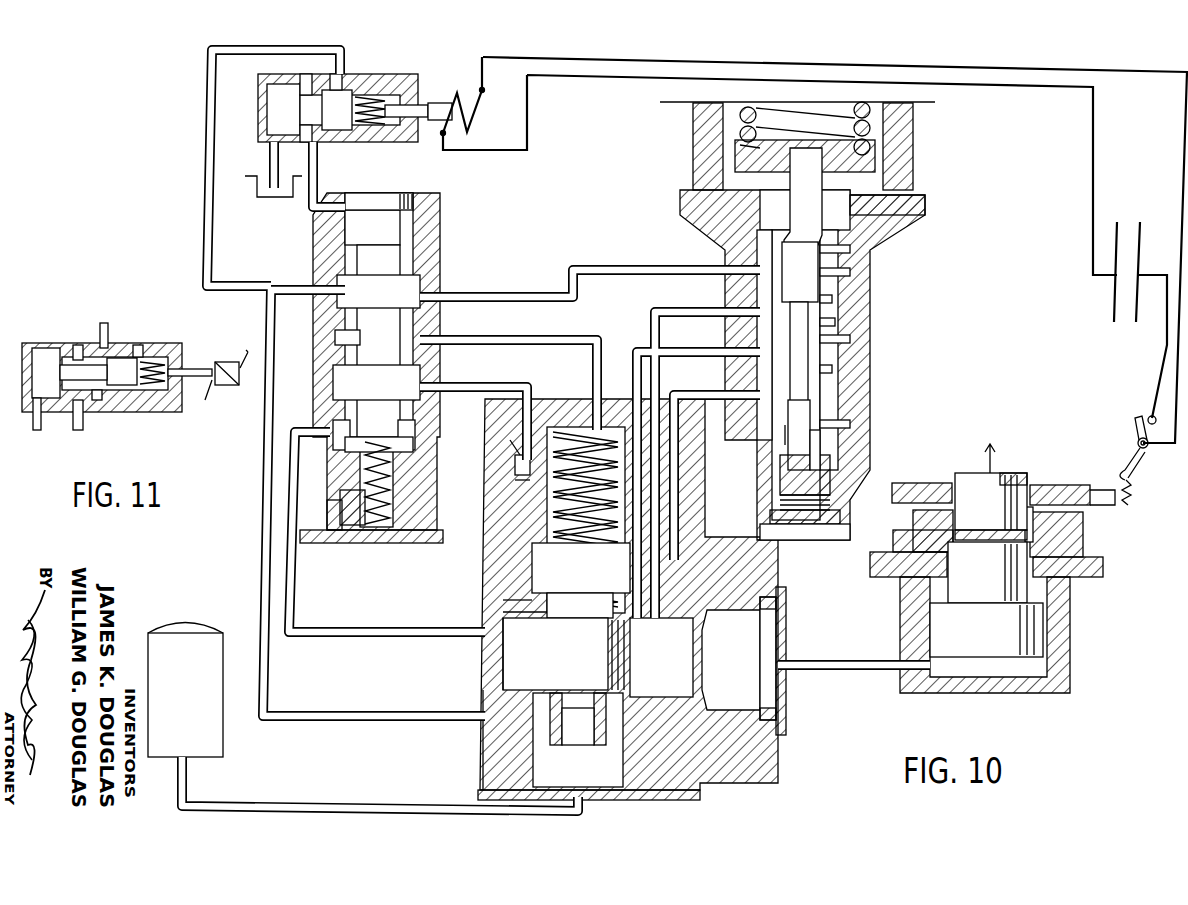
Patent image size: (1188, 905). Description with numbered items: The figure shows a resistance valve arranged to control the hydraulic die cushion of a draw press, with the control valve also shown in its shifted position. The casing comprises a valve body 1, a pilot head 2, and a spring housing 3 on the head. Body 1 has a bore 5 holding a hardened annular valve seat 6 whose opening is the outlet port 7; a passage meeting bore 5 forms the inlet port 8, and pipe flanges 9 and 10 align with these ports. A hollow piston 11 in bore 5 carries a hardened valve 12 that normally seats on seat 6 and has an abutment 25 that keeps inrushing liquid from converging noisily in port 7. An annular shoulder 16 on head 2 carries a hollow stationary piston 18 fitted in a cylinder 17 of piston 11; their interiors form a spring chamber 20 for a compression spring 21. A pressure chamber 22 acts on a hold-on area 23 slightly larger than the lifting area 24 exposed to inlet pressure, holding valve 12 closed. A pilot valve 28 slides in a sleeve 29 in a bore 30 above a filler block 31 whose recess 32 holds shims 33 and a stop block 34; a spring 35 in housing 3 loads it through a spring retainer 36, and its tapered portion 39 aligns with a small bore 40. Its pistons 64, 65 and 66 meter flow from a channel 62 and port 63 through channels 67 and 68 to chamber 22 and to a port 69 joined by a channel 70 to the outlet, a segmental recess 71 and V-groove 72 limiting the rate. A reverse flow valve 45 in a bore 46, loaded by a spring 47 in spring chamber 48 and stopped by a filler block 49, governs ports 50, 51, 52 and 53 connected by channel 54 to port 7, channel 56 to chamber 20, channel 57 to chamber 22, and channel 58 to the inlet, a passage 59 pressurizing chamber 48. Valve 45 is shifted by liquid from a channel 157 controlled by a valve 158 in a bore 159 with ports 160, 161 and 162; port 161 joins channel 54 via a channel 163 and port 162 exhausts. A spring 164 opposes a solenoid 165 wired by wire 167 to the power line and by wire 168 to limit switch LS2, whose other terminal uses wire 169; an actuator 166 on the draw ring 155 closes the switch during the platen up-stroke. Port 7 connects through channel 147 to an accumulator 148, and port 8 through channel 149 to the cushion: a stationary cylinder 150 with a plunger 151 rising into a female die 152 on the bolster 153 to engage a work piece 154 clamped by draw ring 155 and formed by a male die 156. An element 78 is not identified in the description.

In FIG. 10, the valve body 1 is at (758, 766).
In FIG. 10, the pilot head 2 is at (330, 247).
In FIG. 10, the spring housing 3 is at (410, 543).
In FIG. 10, the bore 5 is at (505, 611).
In FIG. 10, the valve seat 6 is at (482, 770).
In FIG. 10, the outlet port 7 is at (558, 770).
In FIG. 10, the inlet port 8 is at (738, 647).
In FIG. 10, the pipe flange 9 is at (676, 800).
In FIG. 10, the pipe flange 10 is at (786, 705).
In FIG. 10, the hollow piston 11 is at (515, 654).
In FIG. 10, the valve 12 is at (572, 655).
In FIG. 10, the annular shoulder 16 is at (512, 444).
In FIG. 10, the cylinder 17 is at (525, 600).
In FIG. 10, the stationary piston 18 is at (522, 514).
In FIG. 10, the spring chamber 20 is at (545, 582).
In FIG. 10, the compression spring 21 is at (536, 560).
In FIG. 10, the pressure chamber 22 is at (514, 464).
In FIG. 10, the hold-on area 23 is at (520, 487).
In FIG. 10, the lifting area 24 is at (641, 626).
In FIG. 10, the abutment 25 is at (588, 729).
In FIG. 10, the pilot valve 28 is at (808, 303).
In FIG. 10, the sleeve 29 is at (835, 300).
In FIG. 10, the bore 30 is at (838, 323).
In FIG. 10, the filler block 31 is at (822, 526).
In FIG. 10, the recess 32 is at (833, 492).
In FIG. 10, the shims 33 is at (795, 525).
In FIG. 10, the stop block 34 is at (833, 472).
In FIG. 10, the compression spring 35 is at (873, 123).
In FIG. 10, the spring retainer 36 is at (875, 167).
In FIG. 10, the tapered portion 39 is at (796, 232).
In FIG. 10, the small bore 40 is at (905, 212).
In FIG. 10, the reverse flow valve 45 is at (392, 329).
In FIG. 10, the bore 46 is at (340, 545).
In FIG. 10, the spring 47 is at (376, 528).
In FIG. 10, the spring chamber 48 is at (342, 510).
In FIG. 10, the filler block 49 is at (398, 192).
In FIG. 10, the port 50 is at (440, 291).
In FIG. 10, the port 51 is at (335, 342).
In FIG. 10, the port 52 is at (333, 373).
In FIG. 10, the port 53 is at (333, 426).
In FIG. 10, the channel 54 is at (278, 336).
In FIG. 10, the channel 56 is at (562, 339).
In FIG. 10, the channel 57 is at (500, 386).
In FIG. 10, the channel 58 is at (420, 631).
In FIG. 10, the passage 59 is at (345, 445).
In FIG. 10, the channel 62 is at (718, 395).
In FIG. 10, the port 63 is at (812, 406).
In FIG. 10, the piston 64 is at (822, 442).
In FIG. 10, the piston 65 is at (852, 342).
In FIG. 10, the piston 66 is at (870, 251).
In FIG. 10, the channel 67 is at (718, 352).
In FIG. 10, the channel 68 is at (722, 312).
In FIG. 10, the port 69 is at (850, 273).
In FIG. 10, the channel 70 is at (662, 268).
In FIG. 10, the segmental recess 71 is at (810, 380).
In FIG. 10, the V-groove 72 is at (852, 426).
In FIG. 10, the passage 78 is at (790, 432).
In FIG. 10, the channel 147 is at (385, 807).
In FIG. 10, the accumulator 148 is at (190, 673).
In FIG. 10, the channel 149 is at (842, 664).
In FIG. 10, the stationary cylinder 150 is at (1040, 668).
In FIG. 10, the plunger 151 is at (980, 636).
In FIG. 10, the female die 152 is at (1083, 548).
In FIG. 10, the bolster 153 is at (1100, 578).
In FIG. 10, the work piece 154 is at (1034, 512).
In FIG. 10, the draw ring 155 is at (1075, 480).
In FIG. 10, the male die 156 is at (1010, 476).
In FIG. 10, the channel 157 is at (316, 208).
In FIG. 11, the channel 157 is at (80, 420).
In FIG. 10, the valve 158 is at (343, 108).
In FIG. 11, the valve 158 is at (102, 377).
In FIG. 10, the bore 159 is at (345, 86).
In FIG. 11, the bore 159 is at (158, 328).
In FIG. 10, the port 160 is at (318, 80).
In FIG. 11, the port 160 is at (78, 345).
In FIG. 10, the port 161 is at (312, 140).
In FIG. 11, the port 161 is at (96, 400).
In FIG. 10, the port 162 is at (270, 82).
In FIG. 11, the port 162 is at (45, 348).
In FIG. 10, the channel 163 is at (207, 135).
In FIG. 11, the channel 163 is at (104, 323).
In FIG. 10, the spring 164 is at (375, 128).
In FIG. 11, the spring 164 is at (150, 392).
In FIG. 10, the solenoid 165 is at (466, 84).
In FIG. 11, the solenoid 165 is at (228, 362).
In FIG. 10, the actuator 166 is at (1117, 504).
In FIG. 10, the wire 167 is at (527, 100).
In FIG. 10, the wire 168 is at (1186, 142).
In FIG. 10, the wire 169 is at (1167, 358).
In FIG. 10, the limit switch LS2 is at (1121, 435).